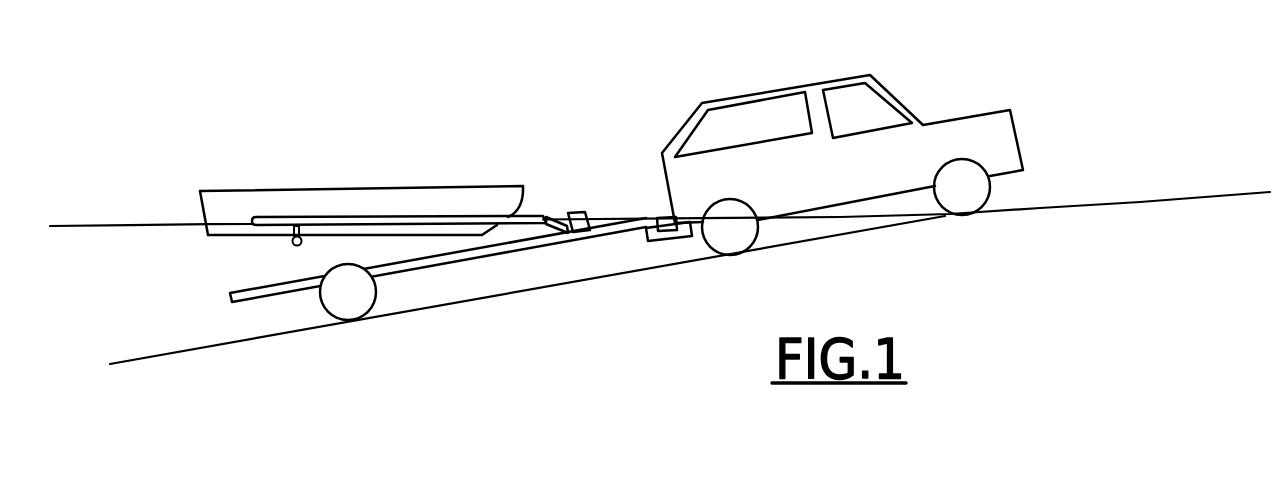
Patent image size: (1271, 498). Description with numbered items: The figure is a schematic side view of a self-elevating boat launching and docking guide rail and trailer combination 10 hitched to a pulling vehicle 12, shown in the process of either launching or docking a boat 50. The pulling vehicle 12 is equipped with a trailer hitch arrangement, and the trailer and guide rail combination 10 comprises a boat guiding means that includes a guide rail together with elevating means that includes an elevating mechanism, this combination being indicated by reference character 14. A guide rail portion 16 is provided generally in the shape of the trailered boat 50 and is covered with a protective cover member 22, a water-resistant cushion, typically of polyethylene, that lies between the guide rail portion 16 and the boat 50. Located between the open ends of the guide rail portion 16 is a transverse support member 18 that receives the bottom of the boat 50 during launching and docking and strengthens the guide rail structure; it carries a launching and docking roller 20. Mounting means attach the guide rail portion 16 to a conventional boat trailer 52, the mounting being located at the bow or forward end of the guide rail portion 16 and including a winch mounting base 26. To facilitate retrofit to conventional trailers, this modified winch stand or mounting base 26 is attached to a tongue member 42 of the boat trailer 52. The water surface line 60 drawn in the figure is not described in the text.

The trailer and guide rail combination 10 is at (403, 138).
The pulling vehicle 12 is at (712, 80).
The guide rail and elevating mechanism combination 14 is at (552, 203).
The guide rail portion 16 is at (314, 220).
The transverse support member 18 is at (292, 234).
The launching and docking roller 20 is at (290, 244).
The protective cover member 22 is at (443, 215).
The winch mounting base 26 is at (579, 212).
The tongue member 42 is at (633, 218).
The boat 50 is at (248, 190).
The boat trailer 52 is at (290, 284).
The water line 60 is at (158, 225).